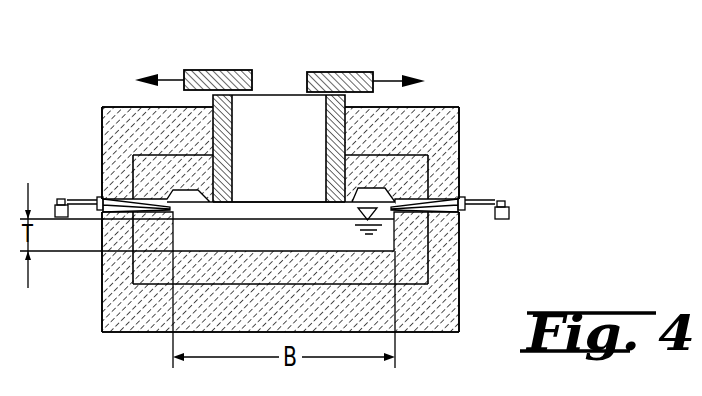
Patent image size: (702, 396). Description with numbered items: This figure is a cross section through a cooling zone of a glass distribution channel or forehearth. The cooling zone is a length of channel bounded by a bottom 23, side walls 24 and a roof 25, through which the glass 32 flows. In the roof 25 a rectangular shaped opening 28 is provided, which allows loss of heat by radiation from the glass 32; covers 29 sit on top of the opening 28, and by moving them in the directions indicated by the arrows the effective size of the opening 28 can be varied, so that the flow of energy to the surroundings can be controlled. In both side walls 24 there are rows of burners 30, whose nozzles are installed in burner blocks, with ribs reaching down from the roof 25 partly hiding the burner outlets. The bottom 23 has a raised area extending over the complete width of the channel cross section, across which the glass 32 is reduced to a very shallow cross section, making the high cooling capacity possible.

The bottom 23 is at (420, 320).
The side walls 24 is at (130, 265).
The roof 25 is at (430, 127).
The rectangular shaped opening 28 is at (292, 155).
The covers 29 is at (213, 70).
The burners 30 is at (91, 196).
The glass 32 is at (283, 231).